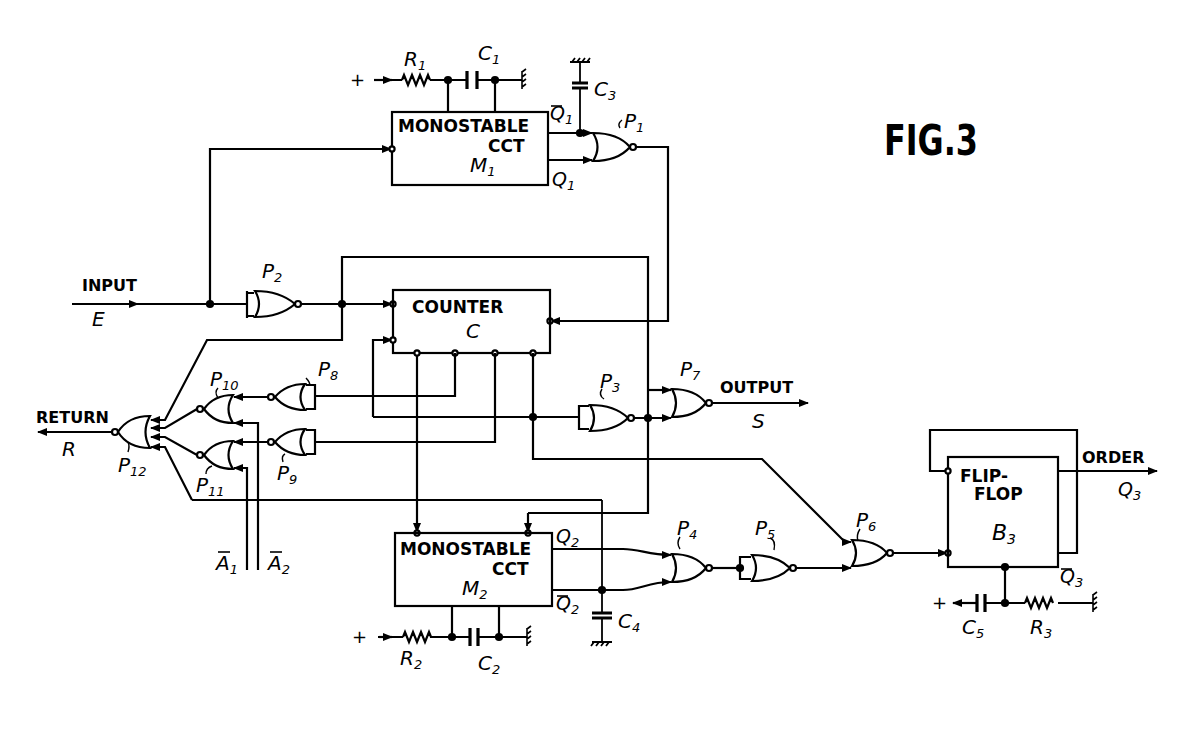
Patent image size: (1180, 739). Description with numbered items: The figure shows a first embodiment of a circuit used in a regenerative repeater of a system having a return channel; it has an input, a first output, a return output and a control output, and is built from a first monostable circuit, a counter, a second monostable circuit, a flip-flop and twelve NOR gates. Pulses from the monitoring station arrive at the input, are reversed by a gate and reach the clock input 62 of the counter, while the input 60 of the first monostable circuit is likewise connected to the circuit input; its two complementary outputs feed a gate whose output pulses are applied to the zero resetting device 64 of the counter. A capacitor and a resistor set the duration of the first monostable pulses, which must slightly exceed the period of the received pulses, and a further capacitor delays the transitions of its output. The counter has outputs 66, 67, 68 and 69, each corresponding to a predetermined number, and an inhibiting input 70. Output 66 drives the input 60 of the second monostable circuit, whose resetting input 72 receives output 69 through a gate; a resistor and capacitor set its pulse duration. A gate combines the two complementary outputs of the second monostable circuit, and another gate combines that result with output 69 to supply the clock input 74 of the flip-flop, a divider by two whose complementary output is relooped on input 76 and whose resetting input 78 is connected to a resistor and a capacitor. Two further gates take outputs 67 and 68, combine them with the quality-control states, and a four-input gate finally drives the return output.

The monostable circuit input 60 is at (388, 152).
The clock input 62 is at (388, 300).
The zero resetting device 64 is at (554, 318).
The counter output 66 is at (413, 360).
The counter output 67 is at (457, 358).
The counter output 68 is at (496, 358).
The counter output 69 is at (535, 358).
The inhibiting input 70 is at (386, 338).
The resetting input 72 is at (524, 527).
The clock input 74 is at (946, 553).
The flip-flop input 76 is at (948, 473).
The resetting input 78 is at (1008, 575).